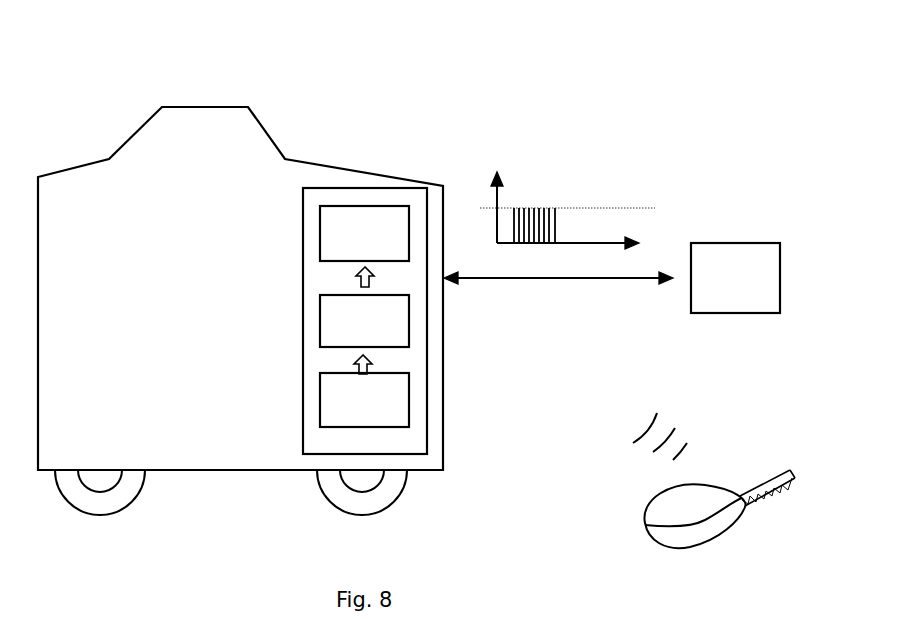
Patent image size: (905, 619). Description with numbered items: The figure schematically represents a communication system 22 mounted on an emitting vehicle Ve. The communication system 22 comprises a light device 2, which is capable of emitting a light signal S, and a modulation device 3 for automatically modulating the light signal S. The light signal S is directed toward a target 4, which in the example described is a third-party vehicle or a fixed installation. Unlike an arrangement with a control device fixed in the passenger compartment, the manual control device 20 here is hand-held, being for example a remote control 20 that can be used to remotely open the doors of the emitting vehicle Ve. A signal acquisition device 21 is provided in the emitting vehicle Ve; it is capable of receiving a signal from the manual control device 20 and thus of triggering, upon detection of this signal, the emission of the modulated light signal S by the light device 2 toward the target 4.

The light device 2 is at (357, 226).
The modulation device 3 is at (338, 328).
The signal acquisition device 21 is at (338, 414).
The communication system 22 is at (707, 60).
The target 4 is at (778, 228).
The light signal S is at (535, 192).
The manual control device 20 is at (660, 490).
The emitting vehicle Ve is at (207, 471).